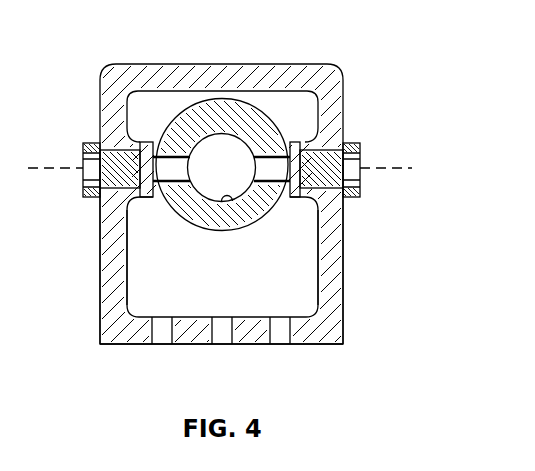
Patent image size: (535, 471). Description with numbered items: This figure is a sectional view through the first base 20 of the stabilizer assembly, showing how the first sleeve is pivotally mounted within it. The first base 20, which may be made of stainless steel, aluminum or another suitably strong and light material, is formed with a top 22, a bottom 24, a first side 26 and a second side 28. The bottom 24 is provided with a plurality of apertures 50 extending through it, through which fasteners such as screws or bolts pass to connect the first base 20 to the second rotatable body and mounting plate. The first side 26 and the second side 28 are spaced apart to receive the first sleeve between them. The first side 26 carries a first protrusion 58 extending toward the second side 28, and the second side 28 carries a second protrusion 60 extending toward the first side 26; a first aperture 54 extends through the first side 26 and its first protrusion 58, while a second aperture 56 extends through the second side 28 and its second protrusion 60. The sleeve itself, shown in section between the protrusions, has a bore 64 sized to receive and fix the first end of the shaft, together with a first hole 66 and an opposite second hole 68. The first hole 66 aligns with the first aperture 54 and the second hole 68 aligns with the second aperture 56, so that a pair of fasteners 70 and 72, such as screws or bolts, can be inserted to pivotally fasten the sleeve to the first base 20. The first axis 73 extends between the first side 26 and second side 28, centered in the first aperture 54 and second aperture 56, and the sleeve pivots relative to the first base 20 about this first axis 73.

The first base 20 is at (298, 64).
The top 22 is at (215, 64).
The bottom 24 is at (113, 345).
The first side 26 is at (343, 278).
The second side 28 is at (100, 255).
The apertures 50 is at (162, 345).
The first aperture 54 is at (325, 150).
The second aperture 56 is at (125, 150).
The first protrusion 58 is at (298, 198).
The second protrusion 60 is at (145, 198).
The bore 64 is at (232, 203).
The first hole 66 is at (255, 164).
The second hole 68 is at (190, 164).
The fastener 70 is at (360, 188).
The fastener 72 is at (83, 188).
The first axis 73 is at (412, 168).